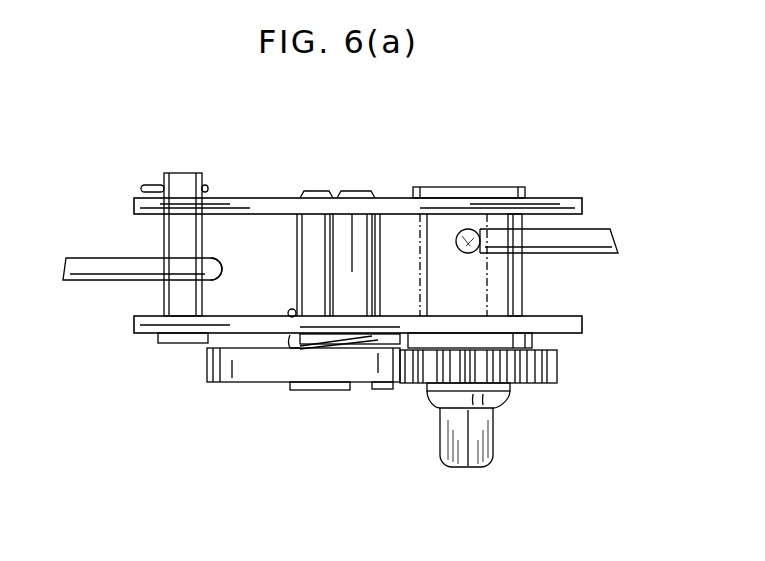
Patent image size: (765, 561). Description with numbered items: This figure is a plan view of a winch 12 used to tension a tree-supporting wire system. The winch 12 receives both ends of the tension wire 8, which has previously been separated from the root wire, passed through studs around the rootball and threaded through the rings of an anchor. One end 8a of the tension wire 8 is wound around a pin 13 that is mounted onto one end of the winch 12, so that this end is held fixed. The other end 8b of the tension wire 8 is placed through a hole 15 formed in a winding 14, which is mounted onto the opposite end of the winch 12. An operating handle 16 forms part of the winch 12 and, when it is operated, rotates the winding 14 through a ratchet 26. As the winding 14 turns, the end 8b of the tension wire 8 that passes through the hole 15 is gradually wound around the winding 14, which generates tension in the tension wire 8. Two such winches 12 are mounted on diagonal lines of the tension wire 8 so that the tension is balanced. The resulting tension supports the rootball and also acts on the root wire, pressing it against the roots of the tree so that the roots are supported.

The tension wire 8 is at (100, 265).
The one end of the tension wire 8a is at (218, 268).
The another end of the tension wire 8b is at (490, 238).
The winch 12 is at (388, 193).
The pin 13 is at (200, 228).
The winding 14 is at (502, 285).
The hole 15 is at (460, 232).
The operating handle 16 is at (238, 371).
The ratchet 26 is at (533, 368).